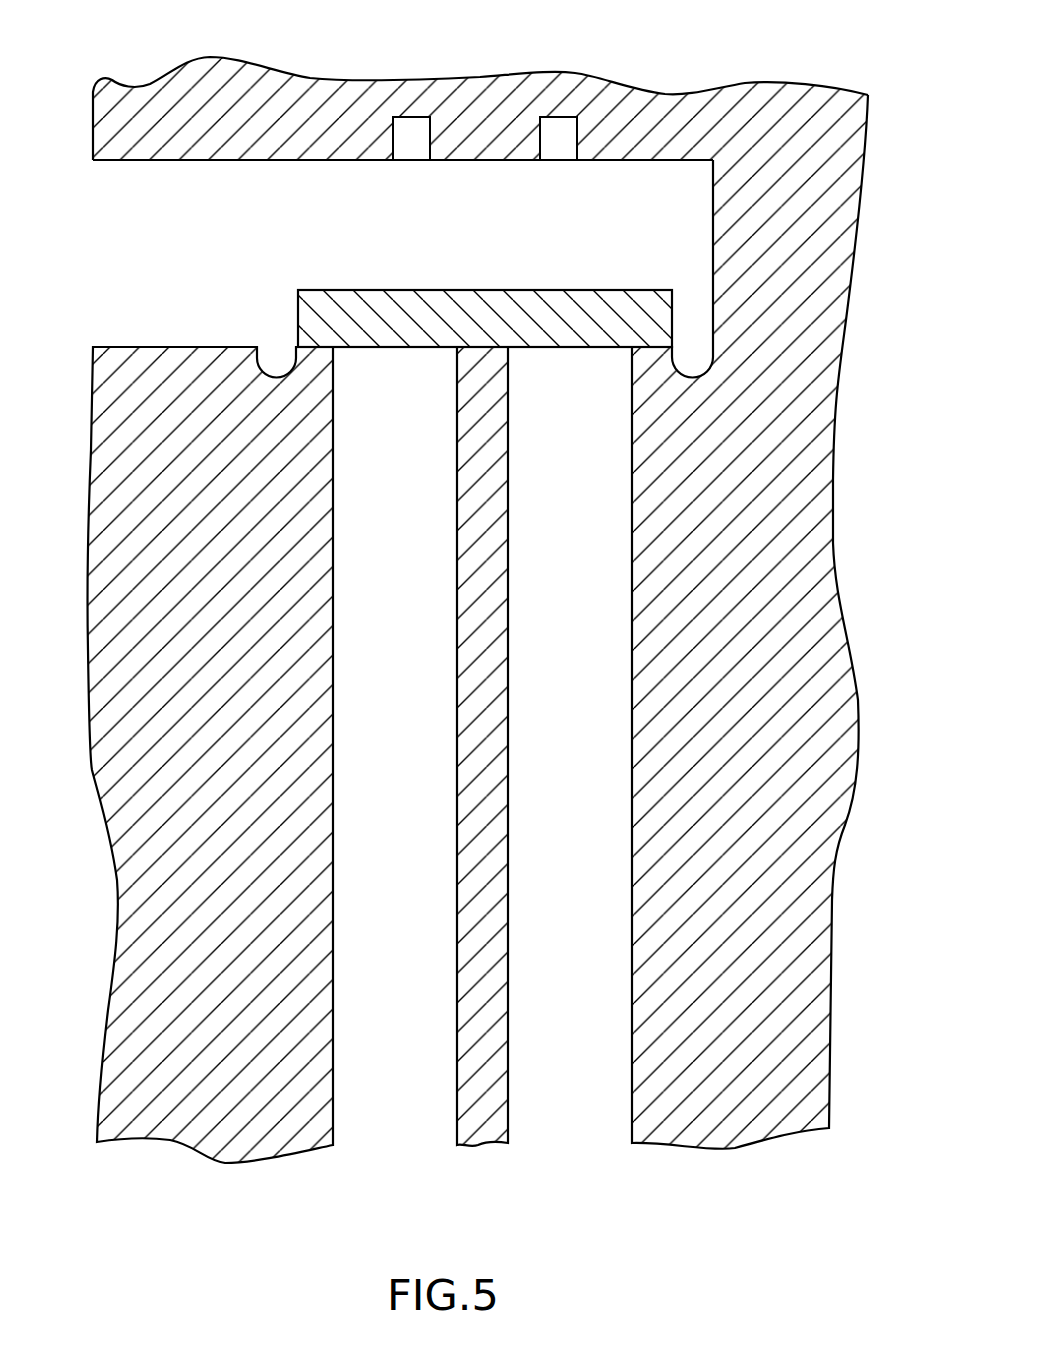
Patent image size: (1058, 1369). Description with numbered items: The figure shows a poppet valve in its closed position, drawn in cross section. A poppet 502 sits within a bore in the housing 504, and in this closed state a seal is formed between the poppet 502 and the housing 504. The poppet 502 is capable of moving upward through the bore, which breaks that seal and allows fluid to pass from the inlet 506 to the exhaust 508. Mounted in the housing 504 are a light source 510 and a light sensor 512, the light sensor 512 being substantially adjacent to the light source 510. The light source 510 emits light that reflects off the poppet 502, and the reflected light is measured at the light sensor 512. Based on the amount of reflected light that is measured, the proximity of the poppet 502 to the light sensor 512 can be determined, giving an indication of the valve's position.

The poppet 502 is at (490, 588).
The housing 504 is at (817, 675).
The inlet 506 is at (234, 190).
The exhaust 508 is at (378, 1117).
The light source 510 is at (418, 128).
The light sensor 512 is at (565, 128).